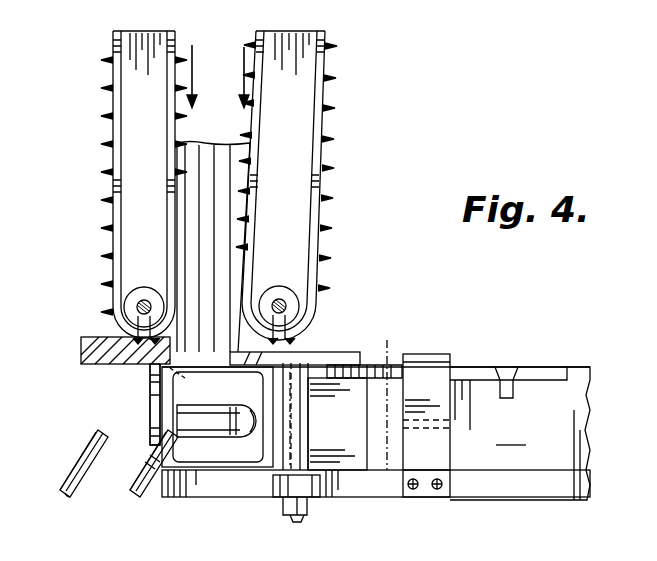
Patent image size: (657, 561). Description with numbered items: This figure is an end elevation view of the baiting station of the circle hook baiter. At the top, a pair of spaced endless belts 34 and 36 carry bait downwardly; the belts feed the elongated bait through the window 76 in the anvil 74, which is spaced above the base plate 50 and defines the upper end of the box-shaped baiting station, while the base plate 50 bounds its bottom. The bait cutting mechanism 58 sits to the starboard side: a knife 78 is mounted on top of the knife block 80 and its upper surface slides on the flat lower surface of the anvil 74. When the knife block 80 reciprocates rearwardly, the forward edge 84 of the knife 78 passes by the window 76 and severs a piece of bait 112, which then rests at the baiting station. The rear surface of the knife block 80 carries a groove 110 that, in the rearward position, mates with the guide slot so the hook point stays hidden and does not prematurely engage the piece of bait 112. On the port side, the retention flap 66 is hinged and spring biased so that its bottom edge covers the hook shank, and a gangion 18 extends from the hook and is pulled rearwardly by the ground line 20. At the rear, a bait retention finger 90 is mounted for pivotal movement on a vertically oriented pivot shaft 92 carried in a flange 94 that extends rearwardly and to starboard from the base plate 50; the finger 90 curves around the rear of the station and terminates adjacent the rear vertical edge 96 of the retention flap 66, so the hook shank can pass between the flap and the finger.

The gangion 18 is at (142, 495).
The ground line 20 is at (72, 468).
The endless belt 34 is at (120, 100).
The endless belt 36 is at (323, 93).
The base plate 50 is at (200, 487).
The bait cutting mechanism 58 is at (566, 362).
The retention flap 66 is at (142, 390).
The anvil 74 is at (92, 350).
The window 76 is at (290, 355).
The knife 78 is at (483, 372).
The knife block 80 is at (520, 433).
The forward edge of the knife 84 is at (340, 390).
The bait retention finger 90 is at (225, 455).
The pivot shaft 92 is at (305, 516).
The flange 94 is at (318, 490).
The rear vertical edge of the retention flap 96 is at (152, 420).
The groove 110 is at (388, 365).
The piece of bait 112 is at (200, 205).